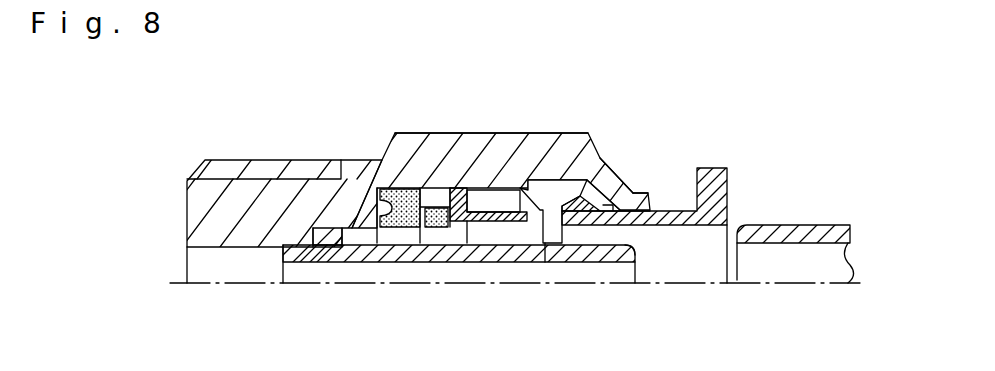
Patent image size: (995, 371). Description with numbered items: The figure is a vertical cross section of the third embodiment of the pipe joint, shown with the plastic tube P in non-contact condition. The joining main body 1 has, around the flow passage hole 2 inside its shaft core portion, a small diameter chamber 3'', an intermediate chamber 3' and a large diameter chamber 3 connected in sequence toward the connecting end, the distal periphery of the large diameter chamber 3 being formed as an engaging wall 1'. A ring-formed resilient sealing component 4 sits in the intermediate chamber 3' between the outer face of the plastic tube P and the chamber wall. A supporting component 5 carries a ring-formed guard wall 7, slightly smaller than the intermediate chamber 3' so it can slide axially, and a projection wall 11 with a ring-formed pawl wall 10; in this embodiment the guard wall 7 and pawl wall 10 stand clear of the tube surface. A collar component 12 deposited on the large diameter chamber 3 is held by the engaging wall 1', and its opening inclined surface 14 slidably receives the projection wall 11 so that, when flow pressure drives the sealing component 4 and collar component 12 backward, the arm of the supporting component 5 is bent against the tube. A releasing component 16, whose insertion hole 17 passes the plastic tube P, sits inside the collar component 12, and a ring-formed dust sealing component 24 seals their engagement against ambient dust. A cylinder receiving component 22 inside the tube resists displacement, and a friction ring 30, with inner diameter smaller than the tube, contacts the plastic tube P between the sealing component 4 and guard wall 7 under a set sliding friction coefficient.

The joining main body 1 is at (491, 105).
The engaging wall 1' is at (661, 148).
The flow passage hole 2 is at (295, 270).
The large diameter chamber 3 is at (493, 156).
The intermediate chamber 3' is at (450, 146).
The small diameter chamber 3'' is at (283, 184).
The ring-formed resilient sealing component 4 is at (430, 186).
The supporting component 5 is at (497, 196).
The ring-formed guard wall 7 is at (465, 232).
The ring-formed pawl wall 10 is at (515, 262).
The projection wall 11 is at (530, 200).
The collar component 12 is at (605, 198).
The opening inclined surface 14 is at (558, 200).
The releasing component 16 is at (668, 228).
The insertion hole 17 is at (622, 268).
The cylinder receiving component 22 is at (372, 256).
The ring-formed dust sealing component 24 is at (648, 190).
The friction ring 30 is at (423, 240).
The plastic tube P is at (775, 230).